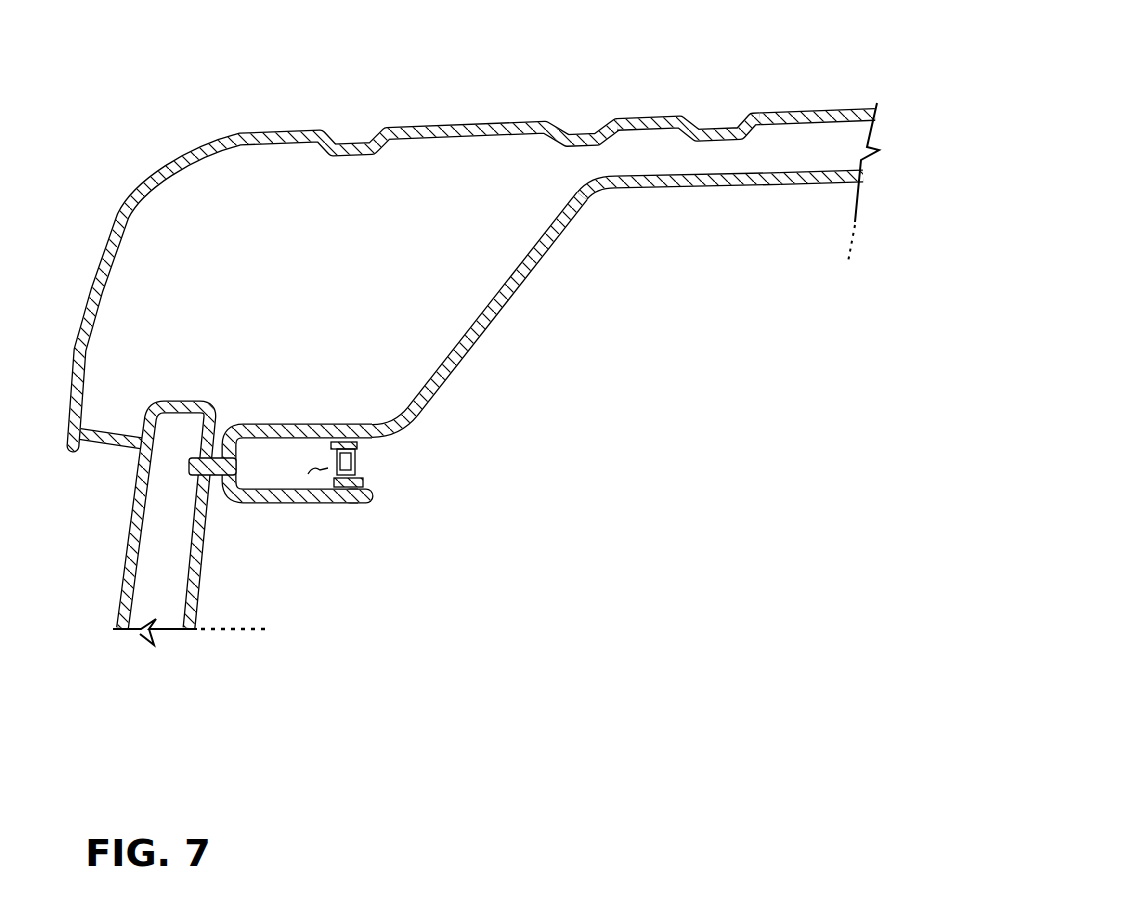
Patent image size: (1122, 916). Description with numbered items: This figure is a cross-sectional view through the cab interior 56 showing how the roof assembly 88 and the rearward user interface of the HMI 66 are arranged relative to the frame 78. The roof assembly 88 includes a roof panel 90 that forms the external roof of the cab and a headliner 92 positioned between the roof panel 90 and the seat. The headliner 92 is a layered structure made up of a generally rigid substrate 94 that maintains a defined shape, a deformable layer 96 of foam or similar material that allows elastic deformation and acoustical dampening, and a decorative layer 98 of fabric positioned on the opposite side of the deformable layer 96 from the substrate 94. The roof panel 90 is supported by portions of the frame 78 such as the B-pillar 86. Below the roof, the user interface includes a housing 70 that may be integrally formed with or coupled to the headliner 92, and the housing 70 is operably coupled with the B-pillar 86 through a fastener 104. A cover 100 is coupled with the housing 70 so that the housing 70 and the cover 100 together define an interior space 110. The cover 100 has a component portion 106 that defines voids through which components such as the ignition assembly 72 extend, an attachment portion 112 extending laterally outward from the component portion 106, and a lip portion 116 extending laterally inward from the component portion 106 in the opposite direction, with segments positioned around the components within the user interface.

The interior 56 is at (595, 364).
The HMI 66 is at (297, 528).
The housing 70 is at (253, 510).
The ignition assembly 72 is at (365, 455).
The frame 78 is at (132, 634).
The B-pillar 86 is at (137, 482).
The roof assembly 88 is at (455, 112).
The roof panel 90 is at (648, 115).
The headliner 92 is at (735, 198).
The substrate 94 is at (810, 170).
The deformable layer 96 is at (862, 175).
The decorative layer 98 is at (842, 190).
The cover 100 is at (383, 490).
The fastener 104 is at (277, 463).
The component portion 106 is at (360, 478).
The interior space 110 is at (281, 443).
The attachment portion 112 is at (331, 517).
The lip portion 116 is at (350, 504).